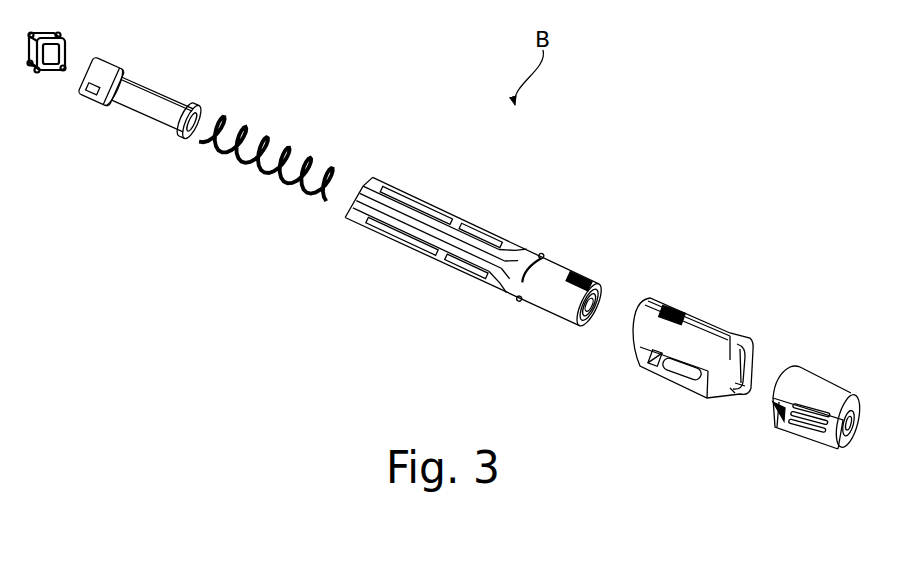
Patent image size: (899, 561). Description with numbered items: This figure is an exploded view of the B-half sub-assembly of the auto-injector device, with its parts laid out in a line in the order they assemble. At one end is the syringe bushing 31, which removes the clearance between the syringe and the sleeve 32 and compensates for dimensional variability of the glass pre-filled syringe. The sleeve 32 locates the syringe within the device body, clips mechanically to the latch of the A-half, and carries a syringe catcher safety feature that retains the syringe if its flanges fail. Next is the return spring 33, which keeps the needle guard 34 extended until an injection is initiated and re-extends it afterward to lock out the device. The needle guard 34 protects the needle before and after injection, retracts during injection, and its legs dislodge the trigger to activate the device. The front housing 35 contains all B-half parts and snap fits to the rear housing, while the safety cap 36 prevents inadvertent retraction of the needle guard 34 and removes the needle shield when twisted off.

The syringe bushing 31 is at (38, 84).
The sleeve 32 is at (131, 130).
The return spring 33 is at (262, 190).
The needle guard 34 is at (430, 280).
The front housing 35 is at (672, 397).
The safety cap 36 is at (797, 449).